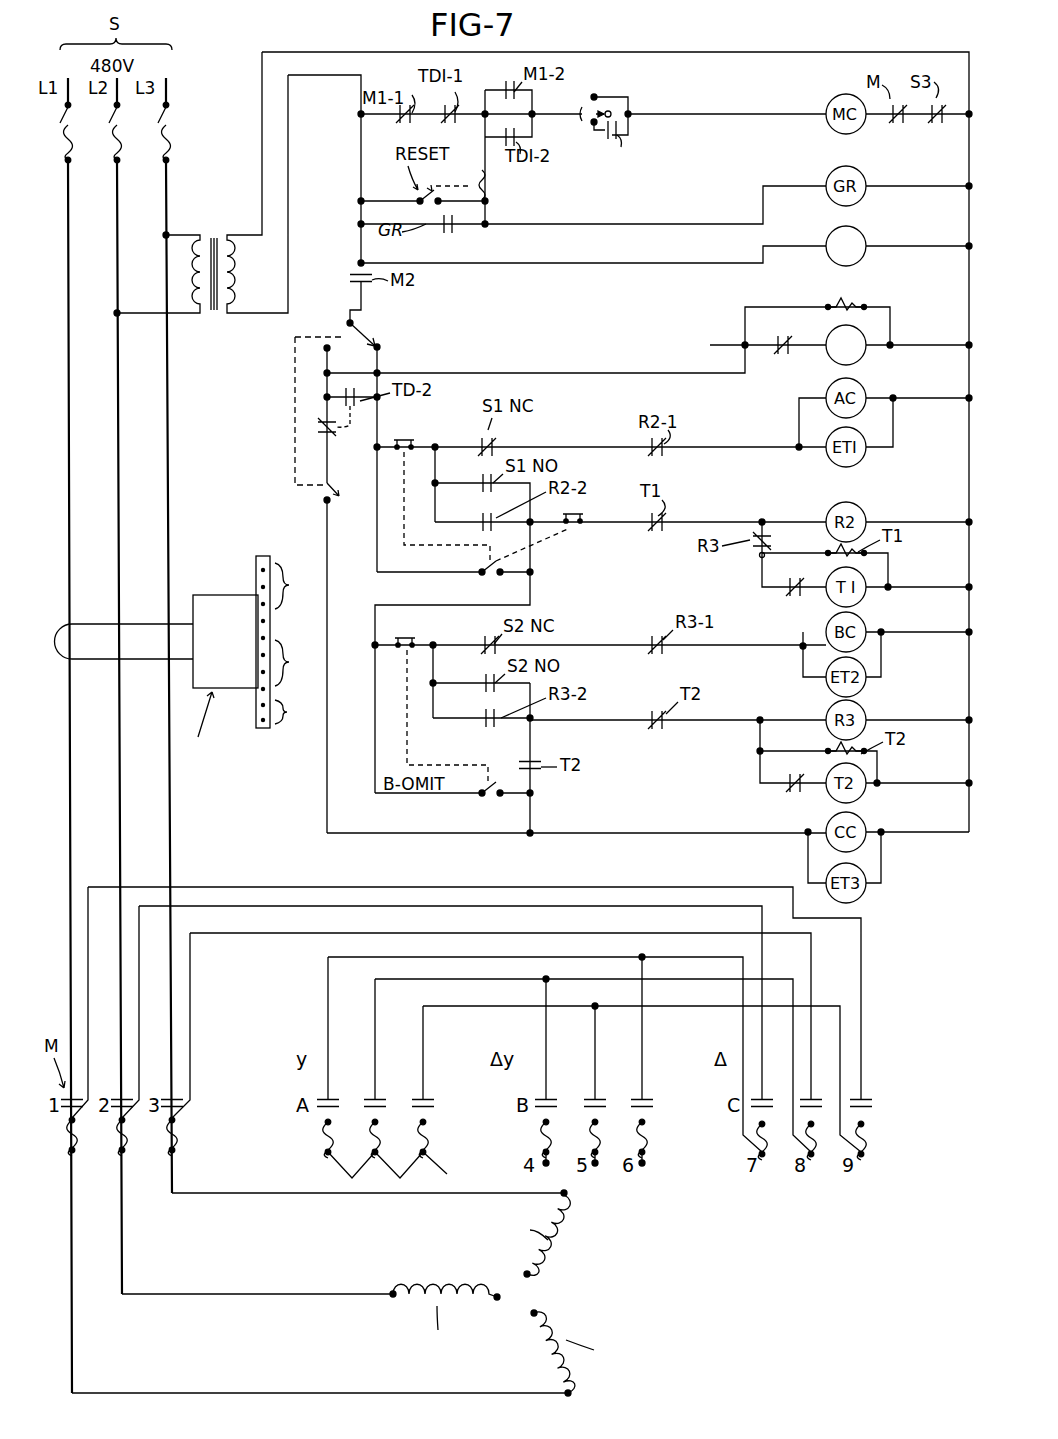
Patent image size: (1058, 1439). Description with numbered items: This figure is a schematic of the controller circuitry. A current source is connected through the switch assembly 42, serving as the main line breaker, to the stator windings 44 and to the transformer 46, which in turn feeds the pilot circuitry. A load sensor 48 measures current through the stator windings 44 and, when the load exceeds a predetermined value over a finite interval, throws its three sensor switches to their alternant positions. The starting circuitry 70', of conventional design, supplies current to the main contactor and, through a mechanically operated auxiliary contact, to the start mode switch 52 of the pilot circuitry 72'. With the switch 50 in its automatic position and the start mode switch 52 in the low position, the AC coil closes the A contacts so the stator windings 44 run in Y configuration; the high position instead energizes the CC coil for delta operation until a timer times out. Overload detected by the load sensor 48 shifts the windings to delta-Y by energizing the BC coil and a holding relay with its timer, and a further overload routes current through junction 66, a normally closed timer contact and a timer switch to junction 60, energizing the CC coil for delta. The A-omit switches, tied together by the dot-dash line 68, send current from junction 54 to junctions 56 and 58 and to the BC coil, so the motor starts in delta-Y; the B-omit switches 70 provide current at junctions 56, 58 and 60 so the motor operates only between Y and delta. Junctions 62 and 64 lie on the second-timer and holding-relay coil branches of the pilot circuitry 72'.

The switch assembly 42 is at (181, 126).
The stator windings 44 is at (604, 1295).
The transformer 46 is at (217, 223).
The load sensor 48 is at (215, 580).
The switch 50 is at (646, 99).
The start mode switch 52 is at (378, 332).
The junction 54 is at (379, 447).
The junction 56 is at (533, 573).
The junction 58 is at (584, 643).
The junction 60 is at (532, 831).
The timer TD2 rung junction 62 is at (841, 320).
The relay R2 coil junction 64 is at (760, 518).
The junction 66 is at (533, 722).
The dot-dash line 68 is at (402, 522).
The B-omit switches 70 is at (412, 717).
The starting circuitry 70' is at (666, 263).
The pilot circuitry 72' is at (536, 353).